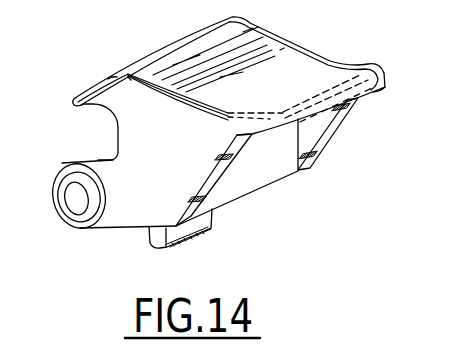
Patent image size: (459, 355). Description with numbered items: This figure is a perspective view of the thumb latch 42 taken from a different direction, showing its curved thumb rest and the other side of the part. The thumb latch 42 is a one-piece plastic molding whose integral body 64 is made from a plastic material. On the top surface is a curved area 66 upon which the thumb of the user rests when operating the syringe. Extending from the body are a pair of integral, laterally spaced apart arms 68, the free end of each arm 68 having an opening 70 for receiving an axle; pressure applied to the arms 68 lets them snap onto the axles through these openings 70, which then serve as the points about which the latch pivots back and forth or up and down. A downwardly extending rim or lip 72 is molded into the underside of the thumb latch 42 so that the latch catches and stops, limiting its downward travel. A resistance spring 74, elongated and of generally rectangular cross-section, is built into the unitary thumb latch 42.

The thumb latch 42 is at (338, 170).
The integral body 64 is at (253, 192).
The curved area 66 is at (288, 57).
The arms 68 is at (92, 156).
The opening 70 is at (78, 207).
The rim or lip 72 is at (73, 102).
The resistance spring 74 is at (200, 233).